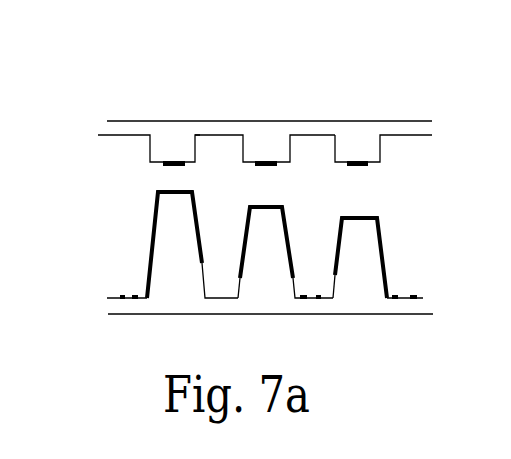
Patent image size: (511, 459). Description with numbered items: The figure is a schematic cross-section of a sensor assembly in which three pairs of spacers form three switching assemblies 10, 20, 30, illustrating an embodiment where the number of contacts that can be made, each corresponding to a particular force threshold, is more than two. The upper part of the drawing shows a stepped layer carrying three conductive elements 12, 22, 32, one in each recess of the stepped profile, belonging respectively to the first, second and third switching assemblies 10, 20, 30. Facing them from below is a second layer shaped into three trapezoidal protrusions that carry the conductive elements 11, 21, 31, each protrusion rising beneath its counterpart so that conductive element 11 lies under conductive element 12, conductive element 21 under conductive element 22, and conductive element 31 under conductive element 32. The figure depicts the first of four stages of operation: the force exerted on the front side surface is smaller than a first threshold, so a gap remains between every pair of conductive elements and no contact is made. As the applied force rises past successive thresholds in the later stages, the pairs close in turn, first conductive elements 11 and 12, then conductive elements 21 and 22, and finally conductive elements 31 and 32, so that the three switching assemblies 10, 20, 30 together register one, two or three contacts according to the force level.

The switching assembly 10 is at (152, 110).
The switching assembly 20 is at (262, 113).
The switching assembly 30 is at (362, 112).
The conductive element 12 is at (167, 165).
The conductive element 22 is at (273, 165).
The conductive element 32 is at (370, 165).
The conductive element 11 is at (152, 238).
The conductive element 21 is at (288, 215).
The conductive element 31 is at (383, 248).